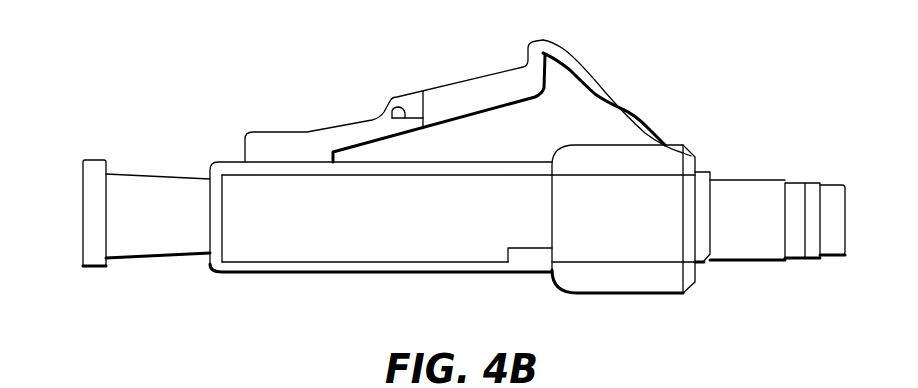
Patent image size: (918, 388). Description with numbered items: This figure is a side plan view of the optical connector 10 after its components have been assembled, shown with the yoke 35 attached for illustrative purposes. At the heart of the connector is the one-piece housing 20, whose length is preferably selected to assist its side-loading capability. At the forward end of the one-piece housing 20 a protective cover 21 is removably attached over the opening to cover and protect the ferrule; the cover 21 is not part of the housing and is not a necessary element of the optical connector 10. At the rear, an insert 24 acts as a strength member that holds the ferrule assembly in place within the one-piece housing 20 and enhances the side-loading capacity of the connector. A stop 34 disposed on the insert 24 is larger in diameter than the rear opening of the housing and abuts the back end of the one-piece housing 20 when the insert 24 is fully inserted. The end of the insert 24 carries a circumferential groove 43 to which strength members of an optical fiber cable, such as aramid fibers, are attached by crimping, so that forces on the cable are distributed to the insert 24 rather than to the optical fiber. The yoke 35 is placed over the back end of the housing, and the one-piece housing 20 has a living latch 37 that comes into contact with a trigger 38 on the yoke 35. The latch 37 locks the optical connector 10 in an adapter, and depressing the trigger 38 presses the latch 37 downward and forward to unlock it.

The optical connector 10 is at (464, 171).
The one-piece housing 20 is at (338, 243).
The protective cover 21 is at (150, 176).
The insert 24 is at (757, 178).
The stop 34 is at (712, 228).
The yoke 35 is at (618, 237).
The living latch 37 is at (443, 87).
The trigger 38 is at (592, 52).
The circumferential groove 43 is at (795, 233).